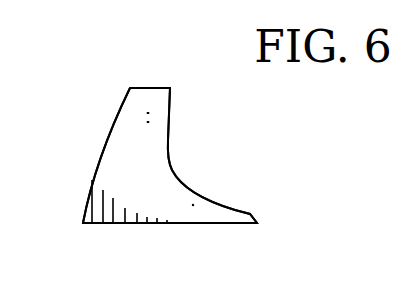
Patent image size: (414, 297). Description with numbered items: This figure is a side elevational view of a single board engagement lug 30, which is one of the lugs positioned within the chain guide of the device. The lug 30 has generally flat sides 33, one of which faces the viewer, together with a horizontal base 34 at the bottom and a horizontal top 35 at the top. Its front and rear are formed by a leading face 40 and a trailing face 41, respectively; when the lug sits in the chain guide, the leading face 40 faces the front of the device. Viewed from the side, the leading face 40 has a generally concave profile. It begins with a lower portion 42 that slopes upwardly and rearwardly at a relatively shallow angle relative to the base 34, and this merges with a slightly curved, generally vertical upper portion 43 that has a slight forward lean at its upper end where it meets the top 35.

The lug 30 is at (175, 203).
The flat sides 33 is at (124, 179).
The horizontal base 34 is at (108, 225).
The top 35 is at (145, 86).
The leading face 40 is at (173, 170).
The trailing face 41 is at (116, 116).
The lower portion 42 is at (235, 210).
The upper portion 43 is at (168, 113).